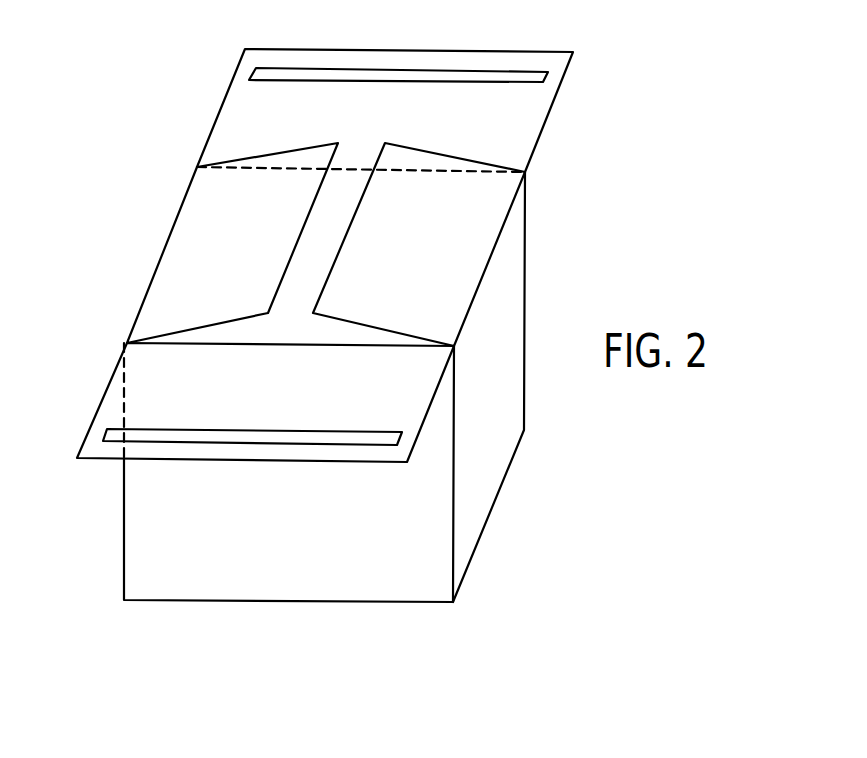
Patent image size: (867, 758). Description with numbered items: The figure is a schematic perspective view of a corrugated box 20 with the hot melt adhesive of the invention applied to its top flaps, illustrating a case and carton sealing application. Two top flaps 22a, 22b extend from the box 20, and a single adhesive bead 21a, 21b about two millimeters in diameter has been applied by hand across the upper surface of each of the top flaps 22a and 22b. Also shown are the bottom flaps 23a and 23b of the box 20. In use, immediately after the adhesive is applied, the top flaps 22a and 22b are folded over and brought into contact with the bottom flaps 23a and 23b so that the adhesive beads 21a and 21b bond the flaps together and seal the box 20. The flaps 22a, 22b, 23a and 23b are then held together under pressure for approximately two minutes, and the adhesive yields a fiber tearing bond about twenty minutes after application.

The corrugated box 20 is at (500, 519).
The adhesive bead 21a is at (490, 68).
The adhesive bead 21b is at (112, 448).
The top flap 22a is at (392, 121).
The top flap 22b is at (292, 402).
The bottom flap 23a is at (257, 247).
The bottom flap 23b is at (440, 258).